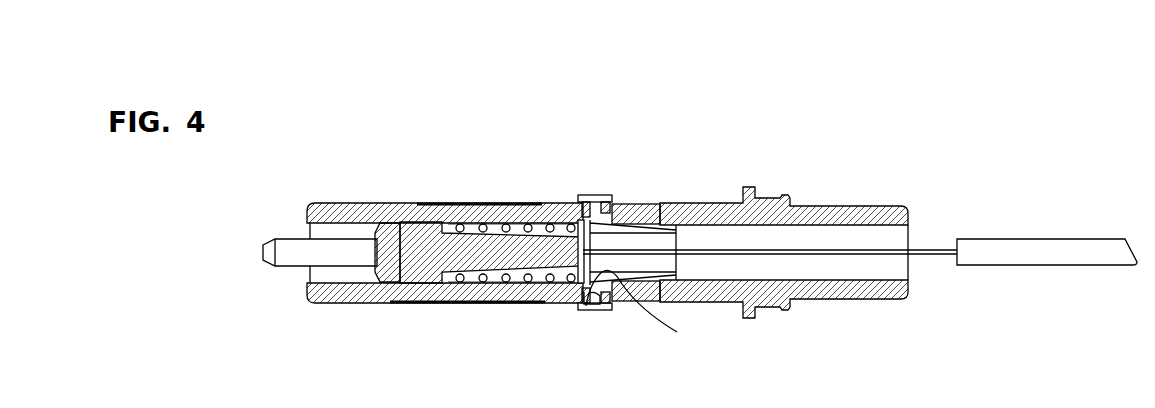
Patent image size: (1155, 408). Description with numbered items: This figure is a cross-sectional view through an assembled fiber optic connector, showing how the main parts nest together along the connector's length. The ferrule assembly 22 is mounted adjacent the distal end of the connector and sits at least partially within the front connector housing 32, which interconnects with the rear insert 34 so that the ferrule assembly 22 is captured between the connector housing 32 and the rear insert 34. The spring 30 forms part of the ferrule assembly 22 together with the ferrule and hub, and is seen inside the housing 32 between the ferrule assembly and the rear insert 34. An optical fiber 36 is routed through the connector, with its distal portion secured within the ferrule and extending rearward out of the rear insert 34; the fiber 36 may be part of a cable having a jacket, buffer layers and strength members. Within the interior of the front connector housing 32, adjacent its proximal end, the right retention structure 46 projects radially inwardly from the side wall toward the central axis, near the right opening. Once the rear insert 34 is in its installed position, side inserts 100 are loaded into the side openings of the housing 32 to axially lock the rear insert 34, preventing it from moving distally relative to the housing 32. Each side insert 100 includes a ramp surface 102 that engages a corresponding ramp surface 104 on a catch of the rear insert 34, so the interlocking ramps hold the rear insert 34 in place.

The ferrule assembly 22 is at (283, 275).
The spring 30 is at (512, 279).
The front connector housing 32 is at (376, 202).
The rear insert 34 is at (840, 206).
The optical fiber 36 is at (932, 250).
The right retention structure 46 is at (618, 208).
The side insert 100 is at (598, 195).
The ramp surface 102 is at (651, 308).
The ramp surface 104 is at (592, 306).